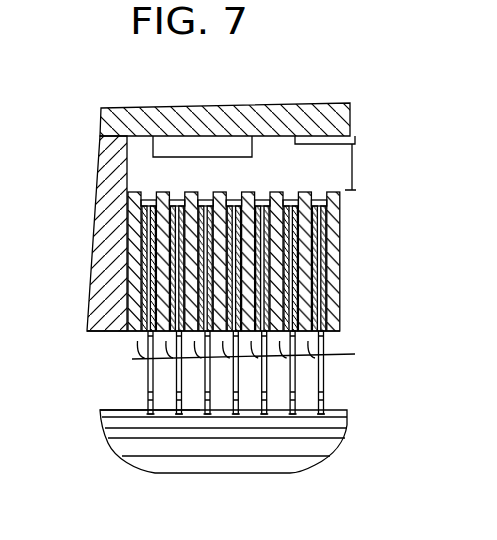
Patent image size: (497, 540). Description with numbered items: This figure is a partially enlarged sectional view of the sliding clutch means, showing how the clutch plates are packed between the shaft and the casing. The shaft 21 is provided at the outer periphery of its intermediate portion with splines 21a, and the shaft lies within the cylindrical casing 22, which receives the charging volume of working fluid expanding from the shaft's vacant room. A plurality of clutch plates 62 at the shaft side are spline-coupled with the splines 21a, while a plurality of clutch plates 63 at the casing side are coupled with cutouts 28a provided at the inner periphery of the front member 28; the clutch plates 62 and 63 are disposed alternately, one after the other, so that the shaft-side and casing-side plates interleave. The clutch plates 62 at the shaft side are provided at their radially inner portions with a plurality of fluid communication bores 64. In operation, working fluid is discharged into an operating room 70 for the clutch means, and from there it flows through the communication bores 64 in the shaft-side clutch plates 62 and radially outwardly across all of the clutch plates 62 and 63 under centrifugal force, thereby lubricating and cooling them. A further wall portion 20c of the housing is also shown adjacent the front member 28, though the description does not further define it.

The cylindrical casing 22 is at (327, 106).
The front member 28 is at (100, 232).
The cutouts 28a is at (346, 154).
The housing side wall 20c is at (356, 192).
The clutch plates at the casing side 63 is at (338, 252).
The clutch plates at the shaft side 62 is at (320, 285).
The fluid communication bores 64 is at (328, 369).
The operating room 70 is at (253, 390).
The shaft 21 is at (322, 447).
The splines 21a is at (118, 408).